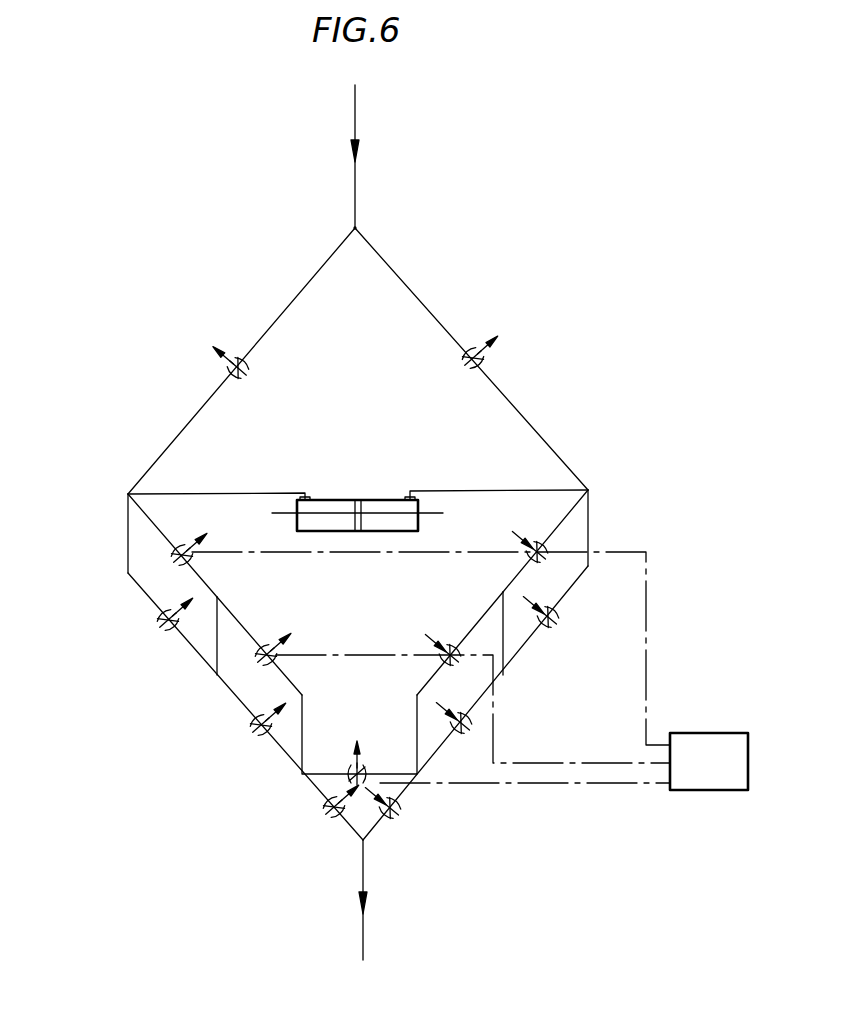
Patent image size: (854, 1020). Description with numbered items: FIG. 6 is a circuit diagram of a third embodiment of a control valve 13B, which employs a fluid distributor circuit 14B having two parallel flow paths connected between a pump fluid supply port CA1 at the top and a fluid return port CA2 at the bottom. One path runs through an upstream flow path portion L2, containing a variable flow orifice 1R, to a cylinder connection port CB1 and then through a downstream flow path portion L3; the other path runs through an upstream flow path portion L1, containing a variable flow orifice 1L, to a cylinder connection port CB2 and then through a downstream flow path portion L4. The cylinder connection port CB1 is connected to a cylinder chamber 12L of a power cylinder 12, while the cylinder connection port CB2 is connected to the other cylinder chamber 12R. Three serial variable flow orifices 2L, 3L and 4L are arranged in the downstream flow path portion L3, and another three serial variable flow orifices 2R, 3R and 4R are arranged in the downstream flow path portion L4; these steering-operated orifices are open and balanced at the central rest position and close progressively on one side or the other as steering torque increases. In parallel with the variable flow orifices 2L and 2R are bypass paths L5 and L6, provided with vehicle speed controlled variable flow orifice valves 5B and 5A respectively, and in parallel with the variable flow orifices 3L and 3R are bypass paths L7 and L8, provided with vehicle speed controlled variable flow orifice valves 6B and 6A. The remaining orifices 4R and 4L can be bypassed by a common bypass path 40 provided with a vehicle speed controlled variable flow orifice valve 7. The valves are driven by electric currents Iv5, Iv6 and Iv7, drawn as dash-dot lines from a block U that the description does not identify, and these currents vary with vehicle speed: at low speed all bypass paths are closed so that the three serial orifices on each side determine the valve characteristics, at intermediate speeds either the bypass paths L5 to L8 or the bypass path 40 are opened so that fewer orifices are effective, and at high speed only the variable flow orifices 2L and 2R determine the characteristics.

The control valve 13B is at (272, 243).
The fluid distributor circuit 14B is at (471, 359).
The pump fluid supply port CA1 is at (355, 228).
The fluid return port CA2 is at (363, 840).
The cylinder connection port CB1 is at (588, 490).
The cylinder connection port CB2 is at (128, 494).
The upstream flow path portion L1 is at (316, 274).
The upstream flow path portion L2 is at (406, 281).
The downstream flow path portion L3 is at (581, 581).
The downstream flow path portion L4 is at (142, 587).
The bypass path L5 is at (557, 526).
The bypass path L6 is at (162, 531).
The bypass path L7 is at (482, 614).
The bypass path L8 is at (255, 627).
The variable flow orifice 1L is at (229, 350).
The variable flow orifice 1R is at (472, 364).
The variable flow orifice 2L is at (544, 625).
The variable flow orifice 2R is at (166, 625).
The variable flow orifice 3L is at (453, 730).
The variable flow orifice 3R is at (254, 730).
The variable flow orifice 4L is at (382, 816).
The variable flow orifice 4R is at (328, 815).
The vehicle speed controlled variable flow orifice valve 5A is at (199, 548).
The vehicle speed controlled variable flow orifice valve 5B is at (510, 544).
The vehicle speed controlled variable flow orifice valve 6A is at (285, 646).
The vehicle speed controlled variable flow orifice valve 6B is at (425, 646).
The vehicle speed controlled variable flow orifice valve 7 is at (347, 759).
The power cylinder 12 is at (357, 515).
The cylinder chamber 12R is at (330, 522).
The cylinder chamber 12L is at (388, 522).
The common bypass path 40 is at (388, 772).
The electric current Iv5 is at (434, 648).
The electric current Iv6 is at (473, 710).
The electric current Iv7 is at (525, 797).
The control unit U is at (710, 733).